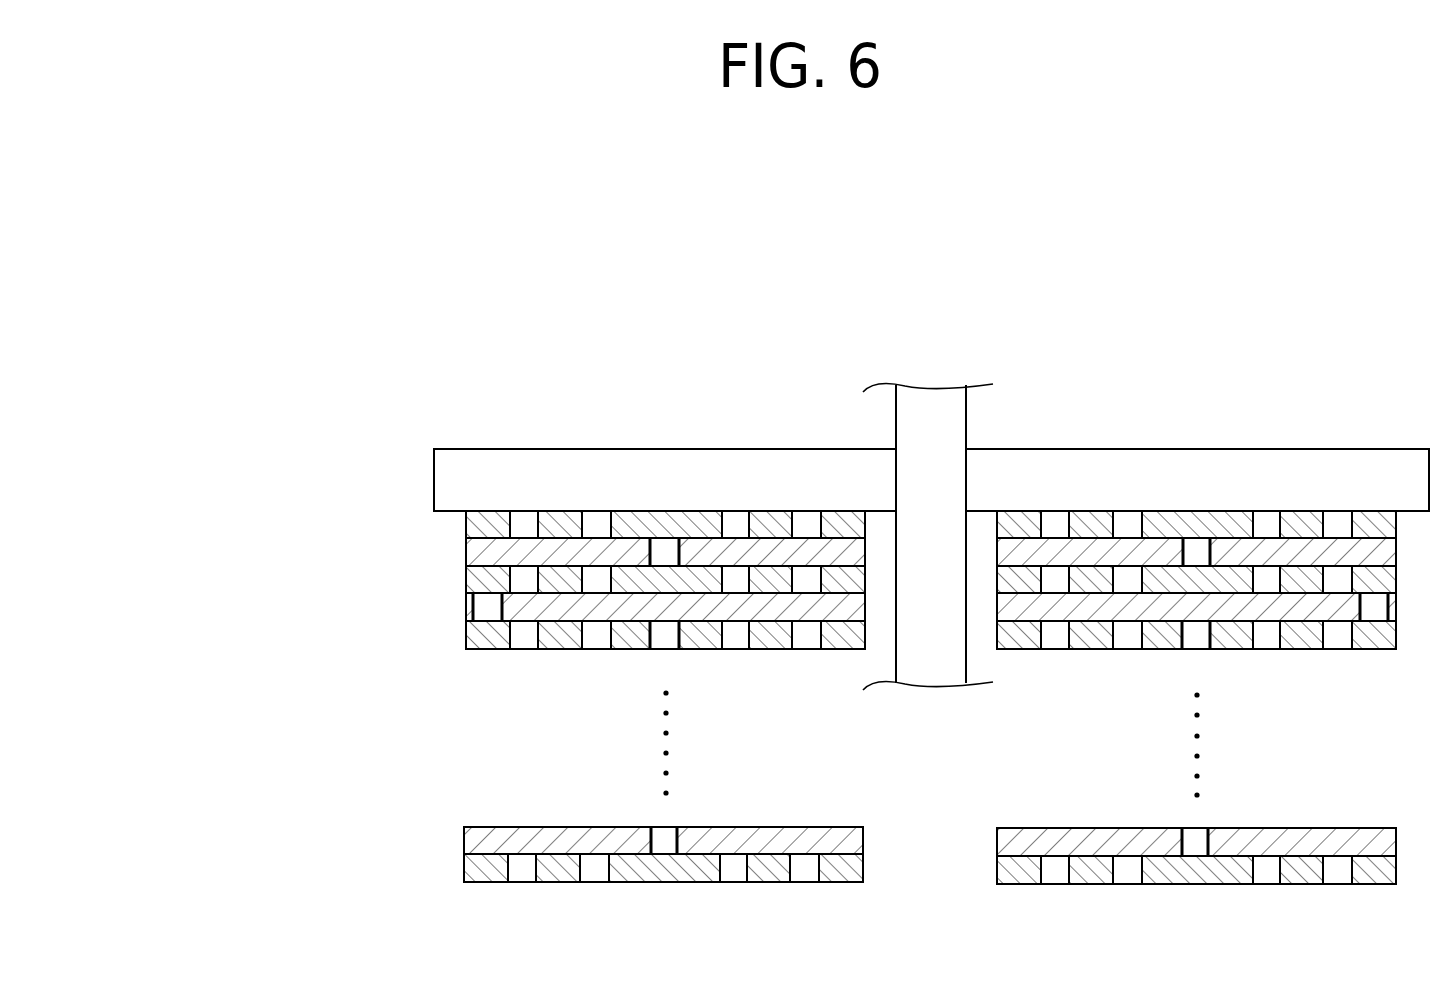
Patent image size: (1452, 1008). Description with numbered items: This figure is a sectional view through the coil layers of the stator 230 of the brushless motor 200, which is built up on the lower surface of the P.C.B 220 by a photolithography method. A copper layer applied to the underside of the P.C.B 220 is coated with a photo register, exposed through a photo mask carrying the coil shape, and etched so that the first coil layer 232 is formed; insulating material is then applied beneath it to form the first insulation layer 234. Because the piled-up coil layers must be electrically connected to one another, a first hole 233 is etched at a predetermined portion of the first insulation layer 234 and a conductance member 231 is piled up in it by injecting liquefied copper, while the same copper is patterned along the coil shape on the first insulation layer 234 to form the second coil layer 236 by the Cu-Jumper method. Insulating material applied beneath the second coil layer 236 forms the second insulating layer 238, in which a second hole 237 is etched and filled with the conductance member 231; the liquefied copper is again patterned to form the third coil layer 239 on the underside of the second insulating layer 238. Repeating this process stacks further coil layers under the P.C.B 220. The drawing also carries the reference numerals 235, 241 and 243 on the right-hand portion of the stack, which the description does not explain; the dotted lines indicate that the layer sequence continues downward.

The brushless motor 200 is at (838, 241).
The P.C.B 220 is at (540, 478).
The stator 230 is at (258, 513).
The conductance member 231 is at (667, 558).
The first coil layer 232 is at (492, 522).
The first hole 233 is at (1192, 545).
The first insulation layer 234 is at (490, 549).
The conductive via 235 is at (1383, 624).
The second coil layer 236 is at (492, 578).
The second hole 237 is at (1201, 560).
The second insulating layer 238 is at (492, 603).
The third coil layer 239 is at (492, 635).
The via connection 241 is at (1366, 605).
The via connection 243 is at (1203, 553).